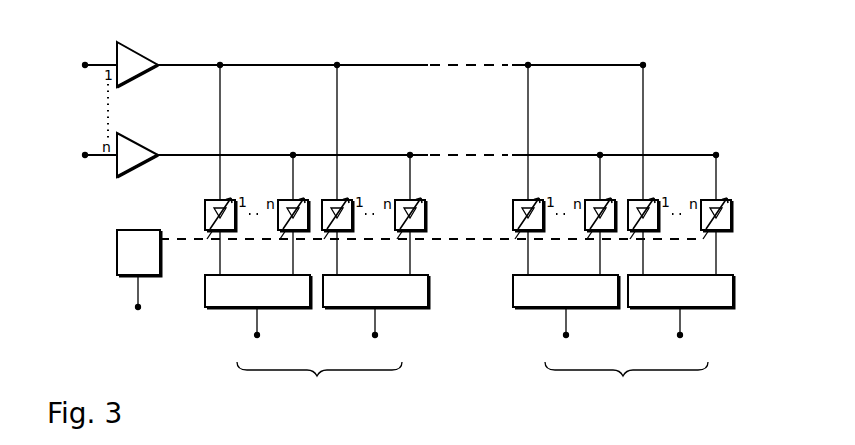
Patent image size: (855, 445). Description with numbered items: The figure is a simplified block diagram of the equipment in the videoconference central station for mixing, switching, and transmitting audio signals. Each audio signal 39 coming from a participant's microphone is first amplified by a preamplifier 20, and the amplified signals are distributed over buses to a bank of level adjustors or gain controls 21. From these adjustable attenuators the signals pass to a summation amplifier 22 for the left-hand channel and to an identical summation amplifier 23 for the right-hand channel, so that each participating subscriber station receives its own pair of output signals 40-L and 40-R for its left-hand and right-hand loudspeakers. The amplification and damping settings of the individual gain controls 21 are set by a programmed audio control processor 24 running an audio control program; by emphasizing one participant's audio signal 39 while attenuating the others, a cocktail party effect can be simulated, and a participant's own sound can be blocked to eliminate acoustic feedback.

The audio signal 39 is at (83, 65).
The preamplifier 20 is at (143, 57).
The level adjustors or gain controls 21 is at (205, 209).
The summation amplifier 22 is at (513, 283).
The summation amplifier 23 is at (428, 283).
The audio control processor 24 is at (117, 240).
The output signal 40-L is at (423, 334).
The output signal 40-R is at (517, 334).